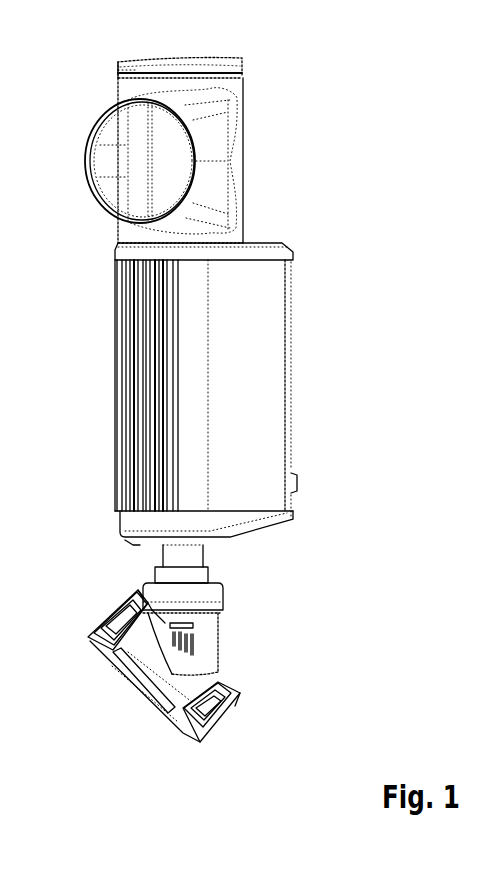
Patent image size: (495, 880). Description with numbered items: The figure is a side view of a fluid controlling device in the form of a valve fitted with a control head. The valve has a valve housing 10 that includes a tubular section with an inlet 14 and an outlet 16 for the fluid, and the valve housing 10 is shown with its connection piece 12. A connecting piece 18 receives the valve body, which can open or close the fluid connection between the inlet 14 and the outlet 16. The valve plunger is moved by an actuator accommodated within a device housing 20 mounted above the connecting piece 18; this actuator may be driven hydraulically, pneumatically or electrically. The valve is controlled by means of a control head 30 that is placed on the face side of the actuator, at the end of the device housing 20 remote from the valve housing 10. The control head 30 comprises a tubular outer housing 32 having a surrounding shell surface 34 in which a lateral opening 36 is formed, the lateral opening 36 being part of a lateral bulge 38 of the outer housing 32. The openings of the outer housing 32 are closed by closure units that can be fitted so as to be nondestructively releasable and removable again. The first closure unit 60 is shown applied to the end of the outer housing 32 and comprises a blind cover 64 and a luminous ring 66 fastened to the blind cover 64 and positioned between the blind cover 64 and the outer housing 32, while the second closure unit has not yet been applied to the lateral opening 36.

The valve housing 10 is at (217, 637).
The valve housing / connection piece 12 is at (222, 682).
The inlet 14 is at (113, 613).
The outlet 16 is at (219, 722).
The connecting piece 18 is at (210, 597).
The device housing 20 is at (273, 373).
The control head 30 is at (268, 176).
The outer housing 32 is at (250, 97).
The shell surface 34 is at (238, 238).
The lateral opening 36 is at (113, 186).
The lateral bulge 38 is at (214, 153).
The first closure unit 60 is at (249, 64).
The blind cover 64 is at (125, 68).
The luminous ring 66 is at (243, 78).